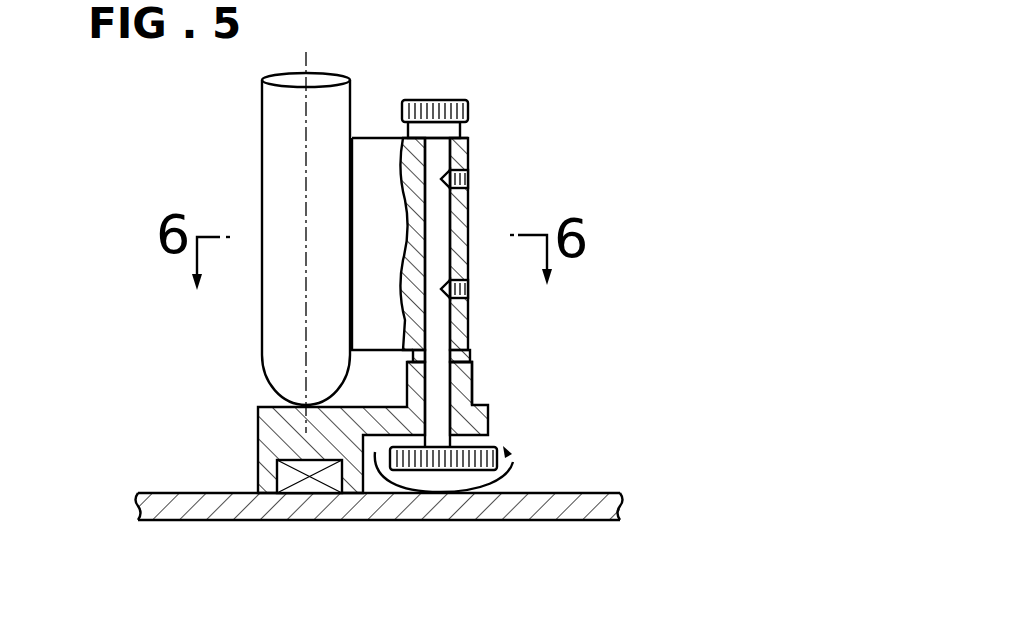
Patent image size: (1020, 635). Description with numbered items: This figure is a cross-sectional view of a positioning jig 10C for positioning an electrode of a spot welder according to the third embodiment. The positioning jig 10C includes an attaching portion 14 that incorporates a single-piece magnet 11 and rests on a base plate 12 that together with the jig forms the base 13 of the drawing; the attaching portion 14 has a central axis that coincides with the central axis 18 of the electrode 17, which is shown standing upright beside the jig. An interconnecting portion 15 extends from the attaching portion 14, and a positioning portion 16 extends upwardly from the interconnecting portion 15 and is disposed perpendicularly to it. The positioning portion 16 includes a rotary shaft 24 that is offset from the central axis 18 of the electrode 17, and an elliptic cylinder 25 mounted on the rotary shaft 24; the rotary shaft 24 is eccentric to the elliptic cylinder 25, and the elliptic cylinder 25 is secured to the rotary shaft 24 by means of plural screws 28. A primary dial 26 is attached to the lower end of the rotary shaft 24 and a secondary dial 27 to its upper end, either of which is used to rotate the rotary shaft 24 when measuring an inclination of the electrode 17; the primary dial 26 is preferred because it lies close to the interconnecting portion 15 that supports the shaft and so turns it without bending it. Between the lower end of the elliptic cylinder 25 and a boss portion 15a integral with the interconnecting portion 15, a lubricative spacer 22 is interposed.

The positioning jig 10C is at (582, 76).
The magnet 11 is at (307, 490).
The base plate 12 is at (624, 505).
The base 13 is at (224, 488).
The attaching portion 14 is at (270, 435).
The interconnecting portion 15 is at (482, 425).
The boss portion 15a is at (470, 396).
The positioning portion 16 is at (603, 112).
The electrode 17 is at (262, 205).
The central axis 18 is at (306, 170).
The lubricative spacer 22 is at (468, 356).
The rotary shaft 24 is at (440, 225).
The elliptic cylinder 25 is at (461, 152).
The primary dial 26 is at (497, 462).
The secondary dial 27 is at (468, 108).
The screws 28 is at (470, 179).